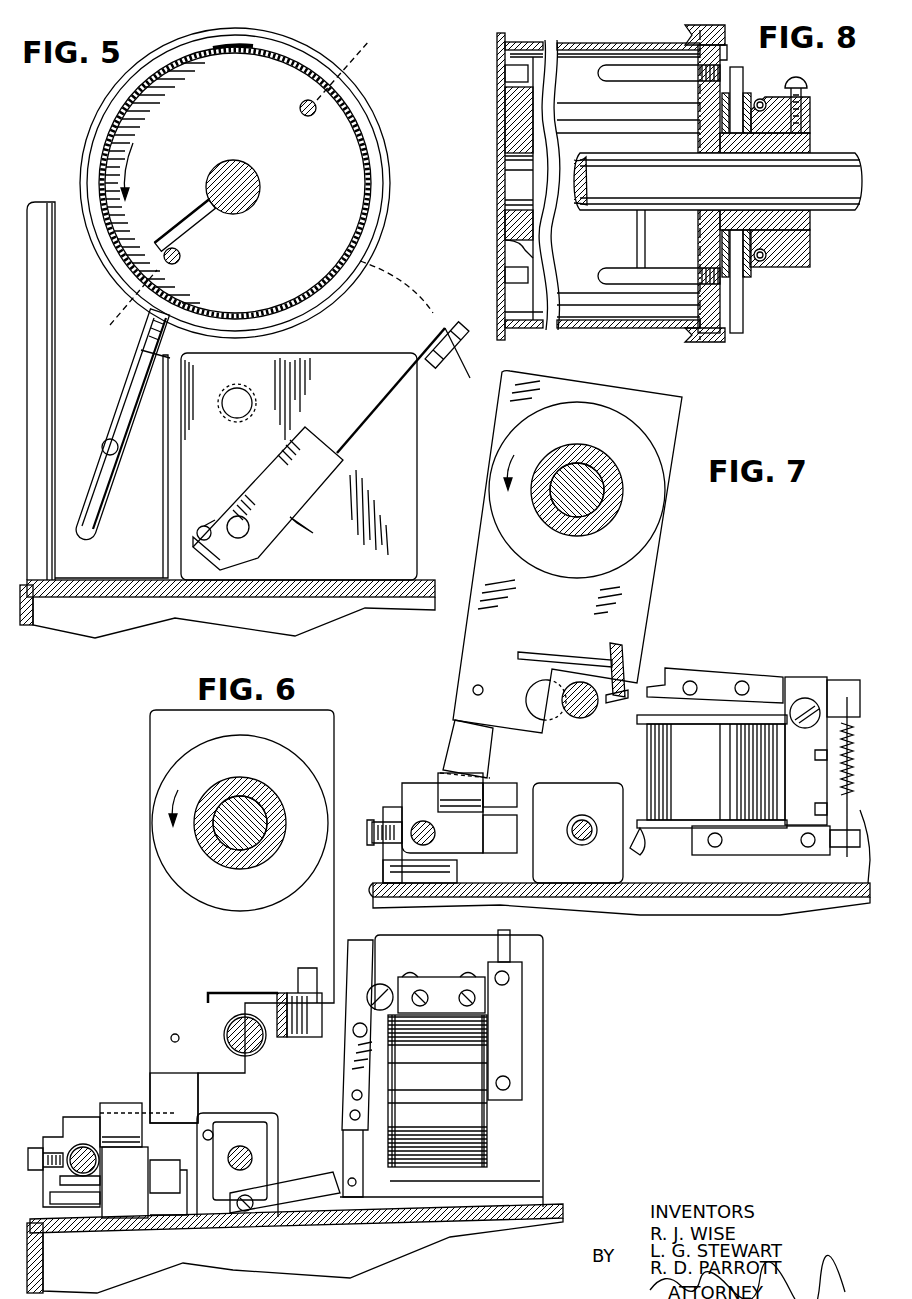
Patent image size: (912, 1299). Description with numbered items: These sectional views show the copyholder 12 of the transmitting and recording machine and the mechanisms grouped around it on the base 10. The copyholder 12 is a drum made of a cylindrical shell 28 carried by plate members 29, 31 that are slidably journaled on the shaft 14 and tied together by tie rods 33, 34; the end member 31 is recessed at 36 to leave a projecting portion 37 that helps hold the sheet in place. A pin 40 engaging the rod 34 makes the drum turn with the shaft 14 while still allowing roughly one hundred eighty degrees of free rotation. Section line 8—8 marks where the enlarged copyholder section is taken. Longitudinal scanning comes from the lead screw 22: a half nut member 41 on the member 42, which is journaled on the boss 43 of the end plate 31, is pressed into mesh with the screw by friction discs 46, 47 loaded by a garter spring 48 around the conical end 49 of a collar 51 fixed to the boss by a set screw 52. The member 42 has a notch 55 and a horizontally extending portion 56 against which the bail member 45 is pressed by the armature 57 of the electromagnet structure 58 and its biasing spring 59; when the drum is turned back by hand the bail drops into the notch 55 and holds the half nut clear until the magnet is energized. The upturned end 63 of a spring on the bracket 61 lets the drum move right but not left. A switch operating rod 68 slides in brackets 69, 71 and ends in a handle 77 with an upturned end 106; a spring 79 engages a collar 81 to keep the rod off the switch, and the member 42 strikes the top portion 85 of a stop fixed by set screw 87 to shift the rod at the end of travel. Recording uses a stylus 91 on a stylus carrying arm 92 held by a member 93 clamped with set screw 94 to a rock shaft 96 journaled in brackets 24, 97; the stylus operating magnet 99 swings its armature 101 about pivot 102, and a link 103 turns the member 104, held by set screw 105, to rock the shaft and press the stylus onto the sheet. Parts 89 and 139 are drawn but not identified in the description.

In FIG. 5, the section line 8— 8 is at (98, 308).
In FIG. 5, the base 10 is at (255, 592).
In FIG. 7, the base 10 is at (640, 898).
In FIG. 6, the base 10 is at (268, 1232).
In FIG. 8, the copyholder 12 is at (497, 140).
In FIG. 5, the shaft 14 is at (232, 162).
In FIG. 8, the shaft 14 is at (818, 157).
In FIG. 7, the shaft 14 is at (585, 525).
In FIG. 6, the shaft 14 is at (250, 845).
In FIG. 7, the lead screw 22 is at (585, 716).
In FIG. 6, the lead screw 22 is at (262, 1042).
In FIG. 5, the bracket 24 is at (345, 358).
In FIG. 5, the cylindrical shell 28 is at (370, 188).
In FIG. 8, the cylindrical shell 28 is at (575, 47).
In FIG. 8, the plate member 29 is at (497, 230).
In FIG. 5, the plate member 31 is at (388, 188).
In FIG. 8, the plate member 31 is at (722, 52).
In FIG. 5, the tie rod 33 is at (302, 104).
In FIG. 8, the tie rod 33 is at (650, 95).
In FIG. 5, the tie rod 34 is at (165, 263).
In FIG. 8, the tie rod 34 is at (626, 268).
In FIG. 8, the recess 36 is at (725, 40).
In FIG. 5, the projecting portion 37 is at (374, 227).
In FIG. 8, the projecting portion 37 is at (688, 38).
In FIG. 5, the pin 40 is at (187, 215).
In FIG. 8, the pin 40 is at (642, 252).
In FIG. 7, the half nut member 41 is at (505, 728).
In FIG. 6, the half nut member 41 is at (215, 1065).
In FIG. 8, the member 42 is at (738, 332).
In FIG. 7, the member 42 is at (648, 570).
In FIG. 6, the member 42 is at (162, 935).
In FIG. 8, the boss 43 is at (812, 143).
In FIG. 7, the boss 43 is at (588, 455).
In FIG. 6, the boss 43 is at (245, 780).
In FIG. 7, the bail member 45 is at (625, 660).
In FIG. 6, the bail member 45 is at (276, 1037).
In FIG. 8, the friction disc 46 is at (750, 300).
In FIG. 7, the friction disc 46 is at (652, 510).
In FIG. 6, the friction disc 46 is at (172, 856).
In FIG. 8, the friction disc 47 is at (748, 280).
In FIG. 8, the garter spring 48 is at (766, 262).
In FIG. 8, the conical end 49 is at (783, 102).
In FIG. 8, the collar 51 is at (810, 252).
In FIG. 8, the set screw 52 is at (805, 84).
In FIG. 7, the notch 55 is at (614, 648).
In FIG. 6, the notch 55 is at (296, 977).
In FIG. 7, the horizontally extending portion 56 is at (562, 664).
In FIG. 6, the horizontally extending portion 56 is at (246, 998).
In FIG. 7, the armature 57 is at (750, 677).
In FIG. 7, the electromagnet structure 58 is at (646, 768).
In FIG. 7, the biasing spring 59 is at (852, 715).
In FIG. 6, the bracket 61 is at (118, 1212).
In FIG. 7, the upturned end 63 is at (445, 785).
In FIG. 6, the upturned end 63 is at (110, 1105).
In FIG. 7, the switch operating rod 68 is at (416, 840).
In FIG. 6, the switch operating rod 68 is at (78, 1147).
In FIG. 7, the bracket 69 is at (390, 808).
In FIG. 6, the bracket 69 is at (53, 1137).
In FIG. 5, the bracket member 71 is at (37, 203).
In FIG. 5, the handle 77 is at (105, 498).
In FIG. 7, the spring 79 is at (420, 875).
In FIG. 6, the spring 79 is at (85, 1204).
In FIG. 6, the collar 81 is at (62, 1176).
In FIG. 7, the top portion 85 is at (503, 792).
In FIG. 6, the top portion 85 is at (183, 1178).
In FIG. 7, the set screw 87 is at (370, 828).
In FIG. 6, the set screw 87 is at (34, 1148).
In FIG. 7, the block 89 is at (490, 818).
In FIG. 5, the stylus 91 is at (446, 352).
In FIG. 5, the stylus carrying arm 92 is at (370, 416).
In FIG. 5, the member 93 is at (311, 440).
In FIG. 5, the set screw 94 is at (206, 526).
In FIG. 5, the rock shaft 96 is at (250, 532).
In FIG. 7, the rock shaft 96 is at (578, 818).
In FIG. 6, the rock shaft 96 is at (252, 1157).
In FIG. 7, the bracket 97 is at (565, 792).
In FIG. 6, the bracket 97 is at (212, 1217).
In FIG. 6, the stylus operating magnet 99 is at (503, 1027).
In FIG. 6, the armature 101 is at (352, 1160).
In FIG. 6, the pivot 102 is at (378, 985).
In FIG. 6, the link 103 is at (300, 1198).
In FIG. 6, the member 104 is at (258, 1122).
In FIG. 6, the set screw 105 is at (205, 1130).
In FIG. 5, the upturned end 106 is at (149, 342).
In FIG. 5, the stop 139 is at (236, 48).